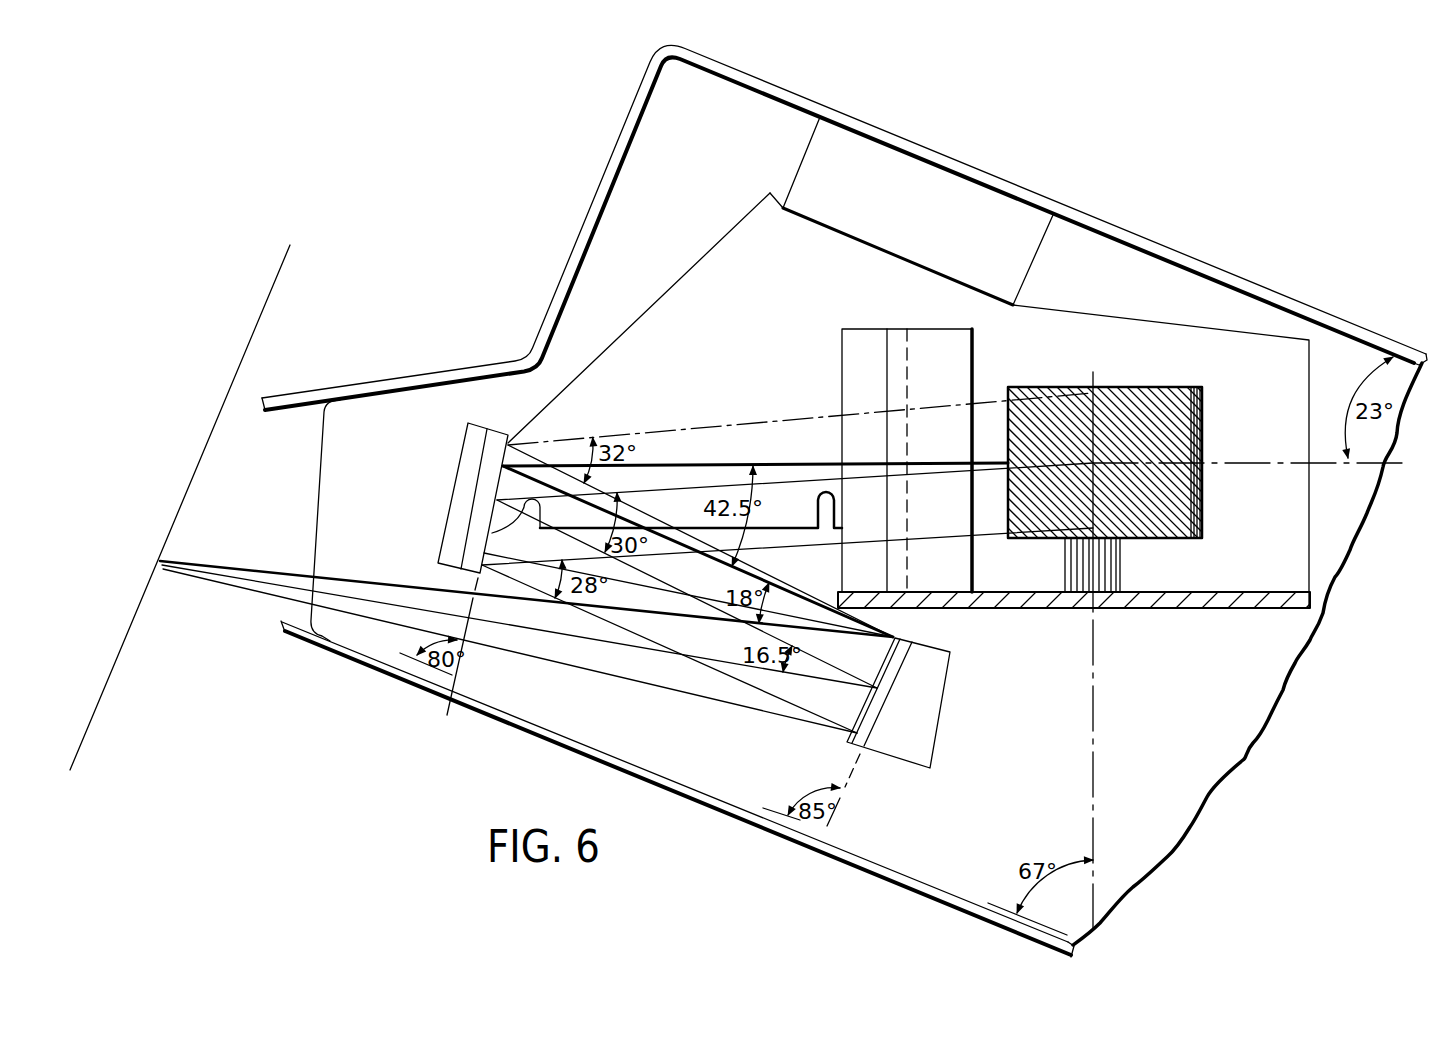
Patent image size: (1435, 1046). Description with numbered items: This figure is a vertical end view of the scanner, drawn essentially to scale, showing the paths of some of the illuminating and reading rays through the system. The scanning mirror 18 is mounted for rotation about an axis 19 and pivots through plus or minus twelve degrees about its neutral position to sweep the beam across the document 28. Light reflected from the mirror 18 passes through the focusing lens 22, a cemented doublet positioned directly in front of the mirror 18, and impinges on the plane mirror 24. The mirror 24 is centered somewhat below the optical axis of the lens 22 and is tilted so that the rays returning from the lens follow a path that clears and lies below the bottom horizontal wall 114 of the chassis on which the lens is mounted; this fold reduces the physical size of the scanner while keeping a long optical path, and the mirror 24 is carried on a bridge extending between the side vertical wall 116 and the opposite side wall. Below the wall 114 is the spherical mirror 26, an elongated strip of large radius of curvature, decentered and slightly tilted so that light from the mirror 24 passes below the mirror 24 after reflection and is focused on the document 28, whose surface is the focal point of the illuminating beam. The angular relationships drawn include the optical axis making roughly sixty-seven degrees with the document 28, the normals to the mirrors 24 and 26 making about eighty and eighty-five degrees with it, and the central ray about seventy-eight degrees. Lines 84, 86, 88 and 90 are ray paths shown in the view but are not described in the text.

The scanning mirror 18 is at (1151, 393).
The axis 19 is at (1093, 402).
The focusing lens 22 is at (912, 336).
The plane mirror 24 is at (495, 412).
The spherical mirror 26 is at (872, 753).
The document 28 is at (199, 464).
The optical axis 84 is at (667, 463).
The upper ray 86 is at (784, 418).
The lower ray 88 is at (786, 550).
The central ray 90 is at (811, 482).
The bottom horizontal wall 114 is at (1214, 588).
The side vertical wall 116 is at (769, 362).